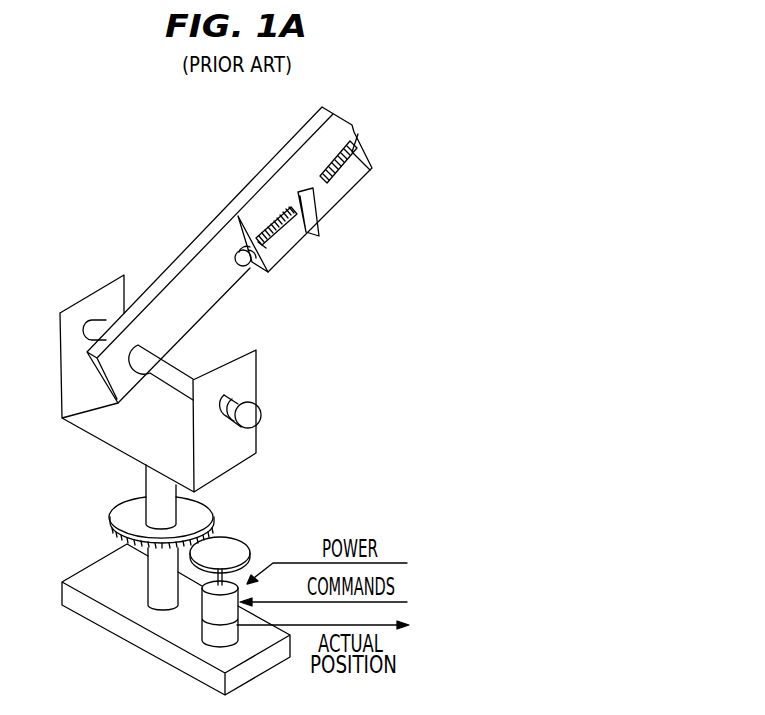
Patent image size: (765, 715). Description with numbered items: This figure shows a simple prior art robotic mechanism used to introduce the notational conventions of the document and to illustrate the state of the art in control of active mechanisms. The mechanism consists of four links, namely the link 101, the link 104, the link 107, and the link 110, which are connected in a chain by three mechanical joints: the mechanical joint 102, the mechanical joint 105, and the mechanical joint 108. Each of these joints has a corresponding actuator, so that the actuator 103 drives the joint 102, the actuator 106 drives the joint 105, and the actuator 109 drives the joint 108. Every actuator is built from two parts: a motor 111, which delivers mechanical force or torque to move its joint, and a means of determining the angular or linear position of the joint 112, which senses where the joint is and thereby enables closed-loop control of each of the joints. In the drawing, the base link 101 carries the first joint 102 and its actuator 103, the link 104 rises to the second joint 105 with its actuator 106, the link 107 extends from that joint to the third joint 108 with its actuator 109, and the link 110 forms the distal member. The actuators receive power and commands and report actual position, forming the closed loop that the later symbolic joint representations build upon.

The link 101 is at (157, 597).
The mechanical joint 102 is at (150, 578).
The actuator 103 is at (240, 585).
The link 104 is at (148, 490).
The mechanical joint 105 is at (152, 357).
The actuator 106 is at (252, 425).
The link 107 is at (178, 297).
The mechanical joint 108 is at (297, 220).
The actuator 109 is at (238, 258).
The link 110 is at (325, 210).
The motor 111 is at (237, 392).
The means of determining the angular or linear position of the joint 112 is at (247, 395).